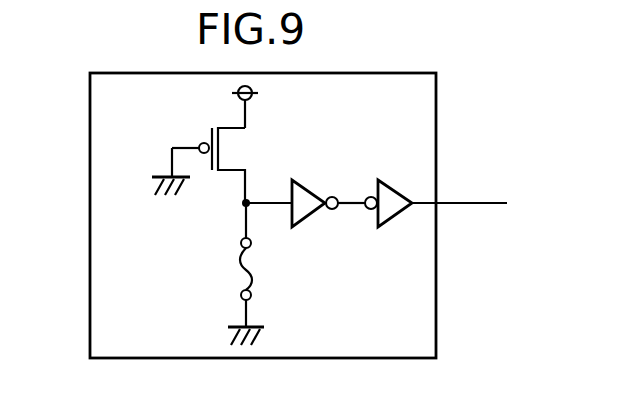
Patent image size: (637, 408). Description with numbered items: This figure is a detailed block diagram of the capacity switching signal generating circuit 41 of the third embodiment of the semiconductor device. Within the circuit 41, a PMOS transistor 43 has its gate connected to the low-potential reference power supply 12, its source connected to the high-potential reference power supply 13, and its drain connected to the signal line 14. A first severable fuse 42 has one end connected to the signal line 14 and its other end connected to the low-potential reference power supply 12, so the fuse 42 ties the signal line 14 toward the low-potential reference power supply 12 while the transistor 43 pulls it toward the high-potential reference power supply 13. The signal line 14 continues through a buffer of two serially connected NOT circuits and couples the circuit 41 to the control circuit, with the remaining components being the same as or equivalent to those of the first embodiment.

The capacity switching signal generating circuit 41 is at (90, 92).
The high-potential reference power supply 13 is at (259, 95).
The PMOS transistor 43 is at (246, 151).
The low-potential reference power supply 12 is at (152, 176).
The first severable fuse 42 is at (258, 273).
The signal line 14 is at (258, 205).